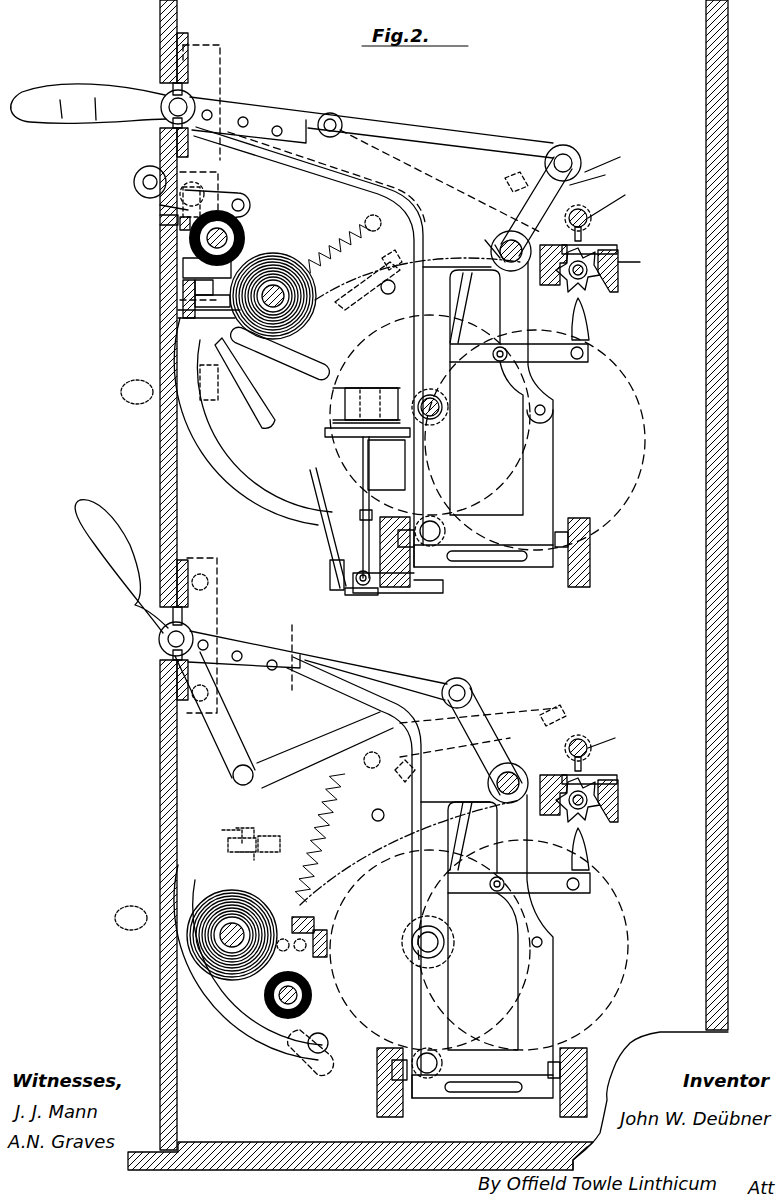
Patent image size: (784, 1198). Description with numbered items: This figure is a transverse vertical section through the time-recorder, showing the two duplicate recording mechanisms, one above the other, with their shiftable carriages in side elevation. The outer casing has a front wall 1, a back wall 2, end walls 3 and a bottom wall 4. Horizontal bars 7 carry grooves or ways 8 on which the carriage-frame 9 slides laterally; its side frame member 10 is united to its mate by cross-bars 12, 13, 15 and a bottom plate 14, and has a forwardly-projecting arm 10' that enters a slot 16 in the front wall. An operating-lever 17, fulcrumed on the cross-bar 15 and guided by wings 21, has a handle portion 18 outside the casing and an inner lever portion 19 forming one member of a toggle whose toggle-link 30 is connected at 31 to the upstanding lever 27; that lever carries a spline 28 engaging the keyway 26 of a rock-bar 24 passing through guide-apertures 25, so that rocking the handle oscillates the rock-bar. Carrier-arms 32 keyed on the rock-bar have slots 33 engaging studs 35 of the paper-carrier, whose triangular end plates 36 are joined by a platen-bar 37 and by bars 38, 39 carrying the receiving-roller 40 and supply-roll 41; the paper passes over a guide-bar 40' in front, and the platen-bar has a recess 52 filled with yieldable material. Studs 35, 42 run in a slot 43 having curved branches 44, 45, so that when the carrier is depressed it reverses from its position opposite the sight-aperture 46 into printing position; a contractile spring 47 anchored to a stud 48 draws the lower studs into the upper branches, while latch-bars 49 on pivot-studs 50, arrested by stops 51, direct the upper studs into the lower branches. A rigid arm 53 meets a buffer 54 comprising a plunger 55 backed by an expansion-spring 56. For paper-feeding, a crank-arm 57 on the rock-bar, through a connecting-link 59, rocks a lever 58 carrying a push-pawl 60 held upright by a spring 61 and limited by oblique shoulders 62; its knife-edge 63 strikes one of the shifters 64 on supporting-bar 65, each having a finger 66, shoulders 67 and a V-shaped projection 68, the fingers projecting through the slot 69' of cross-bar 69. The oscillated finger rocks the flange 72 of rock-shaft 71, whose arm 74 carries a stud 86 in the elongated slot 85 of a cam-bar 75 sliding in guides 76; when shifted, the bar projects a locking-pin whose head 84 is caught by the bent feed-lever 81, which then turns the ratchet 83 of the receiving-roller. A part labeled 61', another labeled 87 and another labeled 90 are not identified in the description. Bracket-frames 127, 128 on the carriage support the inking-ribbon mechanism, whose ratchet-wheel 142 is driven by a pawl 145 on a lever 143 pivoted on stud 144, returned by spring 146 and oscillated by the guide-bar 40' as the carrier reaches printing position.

The front wall 1 is at (177, 532).
The back wall 2 is at (702, 515).
The end walls 3 is at (650, 884).
The bottom wall 4 is at (291, 1142).
The bars 7 is at (590, 530).
The grooves or ways 8 is at (562, 585).
The carriage-frame 9 is at (500, 570).
The side frame member 10 is at (508, 403).
The forwardly-projecting arm 10' is at (312, 347).
The cross-bar 12 is at (548, 410).
The cross-bar 13 is at (435, 545).
The bottom plate 14 is at (530, 570).
The cross-bar 15 is at (185, 100).
The slot 16 is at (165, 92).
The operating-lever 17 is at (66, 126).
The handle portion 18 is at (100, 126).
The inner lever portion 19 is at (292, 113).
The wings 21 is at (215, 45).
The rock-bar 24 is at (500, 264).
The guide-apertures 25 is at (490, 238).
The keyway 26 is at (505, 240).
The lever 27 is at (610, 156).
The spline or key 28 is at (520, 240).
The toggle-link 30 is at (548, 158).
The connection of toggle-link to operating-lever 31 is at (342, 120).
The carrier-arms 32 is at (384, 181).
The slot 33 is at (138, 188).
The stud 35 is at (160, 220).
The end plates 36 is at (274, 282).
The lower cross-bar 37 is at (183, 304).
The shaft or round bar 38 is at (248, 236).
The shaft or round bar 39 is at (314, 314).
The receiving-roller 40 is at (230, 197).
The guide-bar 40' is at (238, 635).
The supply-roll 41 is at (302, 330).
The stud 42 is at (178, 314).
The slot 43 is at (178, 342).
The lower branch 44 is at (190, 422).
The upper branch 45 is at (285, 384).
The sight-aperture 46 is at (183, 270).
The coiled contractile spring 47 is at (347, 259).
The stud 48 is at (372, 232).
The latch-bars 49 is at (175, 327).
The pivot-studs 50 is at (232, 790).
The stops 51 is at (134, 655).
The recess 52 is at (183, 289).
The rigid arm 53 is at (220, 382).
The resistance-block or buffer 54 is at (305, 325).
The plunger 55 is at (268, 836).
The coiled expansion-spring 56 is at (240, 830).
The crank-arm 57 is at (462, 274).
The lever 58 is at (490, 360).
The connecting-link 59 is at (380, 294).
The push-pawl 60 is at (590, 320).
The spring 61 is at (519, 365).
The ratchet mechanism 61' is at (409, 828).
The oblique shoulders 62 is at (572, 347).
The blunt knife-edge 63 is at (582, 303).
The shifters 64 is at (600, 262).
The supporting-bar 65 is at (615, 252).
The finger 66 is at (605, 245).
The shoulders 67 is at (612, 290).
The V-shaped projection 68 is at (605, 287).
The cross-bar 69 is at (646, 260).
The slot 69' is at (663, 263).
The rock-shaft 71 is at (618, 464).
The depending flange 72 is at (605, 215).
The arm 74 is at (580, 208).
The bar 75 is at (520, 730).
The ways or guides 76 is at (405, 787).
The bent feed-lever 81 is at (240, 439).
The ratchet 83 is at (195, 247).
The head 84 is at (380, 292).
The elongated slot 85 is at (545, 182).
The stud 86 is at (595, 175).
The guide 87 is at (225, 180).
The shaft 90 is at (445, 420).
The bracket-frame 127 is at (385, 590).
The bracket-frame 128 is at (368, 468).
The ratchet-wheel 142 is at (360, 597).
The lever 143 is at (322, 534).
The pivot-stud 144 is at (355, 587).
The pawl 145 is at (360, 512).
The spring 146 is at (330, 577).